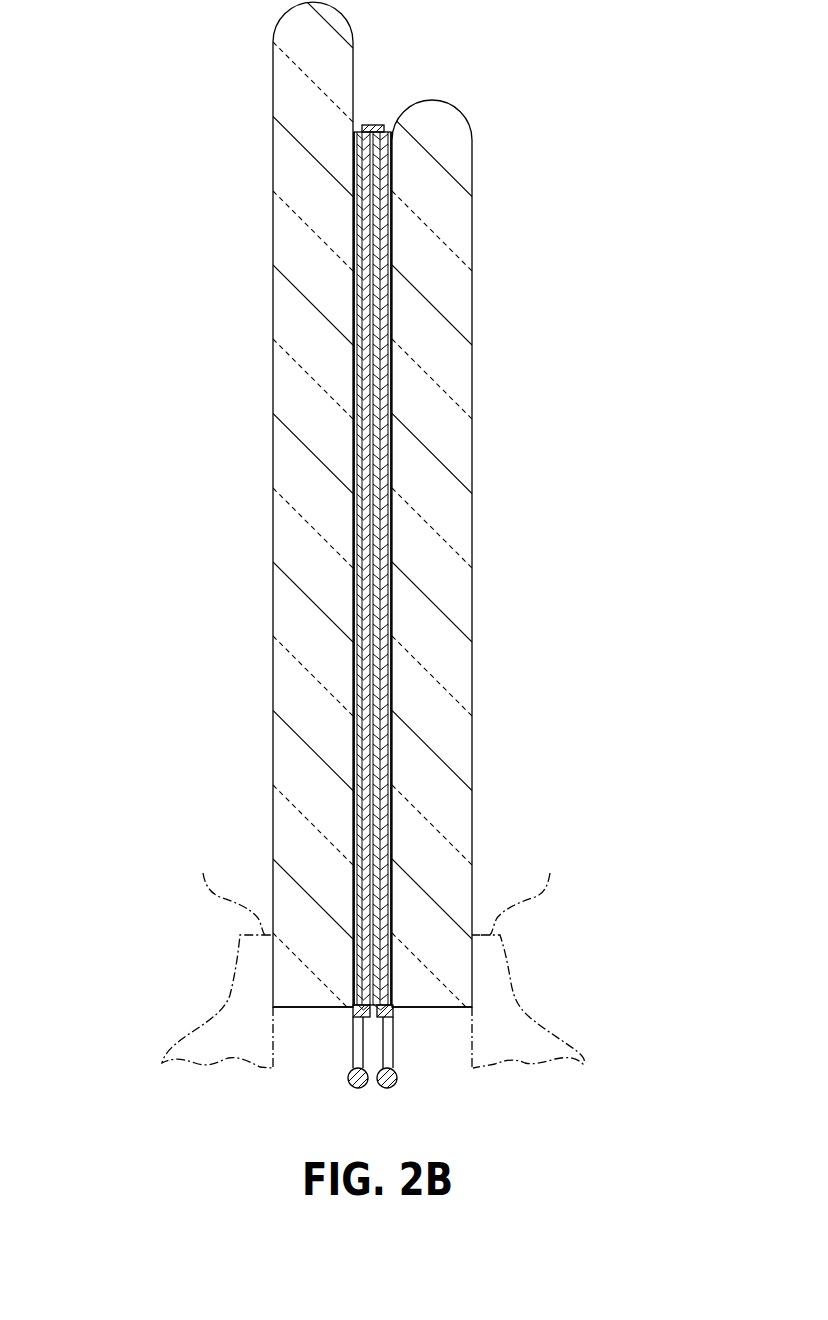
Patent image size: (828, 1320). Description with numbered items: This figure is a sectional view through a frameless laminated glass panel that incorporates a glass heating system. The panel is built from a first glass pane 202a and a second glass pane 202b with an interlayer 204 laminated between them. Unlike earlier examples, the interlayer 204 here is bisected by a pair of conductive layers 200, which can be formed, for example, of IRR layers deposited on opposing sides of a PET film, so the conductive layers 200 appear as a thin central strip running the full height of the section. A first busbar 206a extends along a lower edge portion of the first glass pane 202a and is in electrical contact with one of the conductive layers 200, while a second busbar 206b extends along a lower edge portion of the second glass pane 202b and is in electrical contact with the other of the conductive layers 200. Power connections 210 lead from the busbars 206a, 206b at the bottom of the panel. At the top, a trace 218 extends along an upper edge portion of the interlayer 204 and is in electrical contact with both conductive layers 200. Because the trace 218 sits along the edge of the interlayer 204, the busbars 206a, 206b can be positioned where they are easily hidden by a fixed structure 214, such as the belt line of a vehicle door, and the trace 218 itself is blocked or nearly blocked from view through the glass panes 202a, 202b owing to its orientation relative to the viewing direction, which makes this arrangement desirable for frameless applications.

The conductive layers 200 is at (389, 488).
The first glass pane 202a is at (472, 387).
The second glass pane 202b is at (272, 462).
The interlayer 204 is at (354, 290).
The first busbar 206a is at (395, 1012).
The second busbar 206b is at (352, 1012).
The power connections 210 is at (360, 1088).
The fixed structure 214 is at (373, 959).
The trace 218 is at (374, 125).